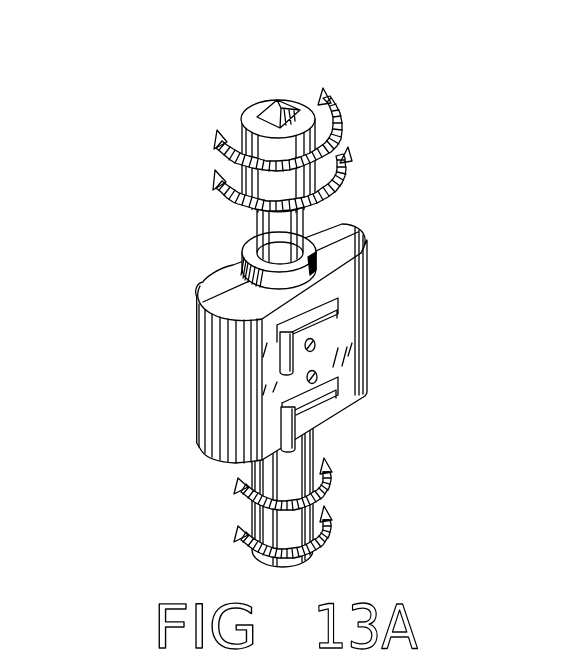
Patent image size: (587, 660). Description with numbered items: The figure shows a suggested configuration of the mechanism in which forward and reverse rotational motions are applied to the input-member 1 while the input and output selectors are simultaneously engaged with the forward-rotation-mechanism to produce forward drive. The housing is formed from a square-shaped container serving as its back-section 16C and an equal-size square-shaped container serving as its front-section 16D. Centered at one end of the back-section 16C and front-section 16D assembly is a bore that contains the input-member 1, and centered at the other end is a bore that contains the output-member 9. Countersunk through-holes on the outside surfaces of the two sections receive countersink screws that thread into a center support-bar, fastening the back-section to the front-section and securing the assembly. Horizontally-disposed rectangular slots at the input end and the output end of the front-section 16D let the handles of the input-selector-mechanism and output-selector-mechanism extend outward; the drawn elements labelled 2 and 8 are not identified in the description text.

The input-member 1 is at (268, 98).
The screw 2 is at (287, 357).
The pin 8 is at (285, 433).
The output-member 9 is at (288, 535).
The back-section 16C is at (223, 282).
The front-section 16D is at (337, 253).